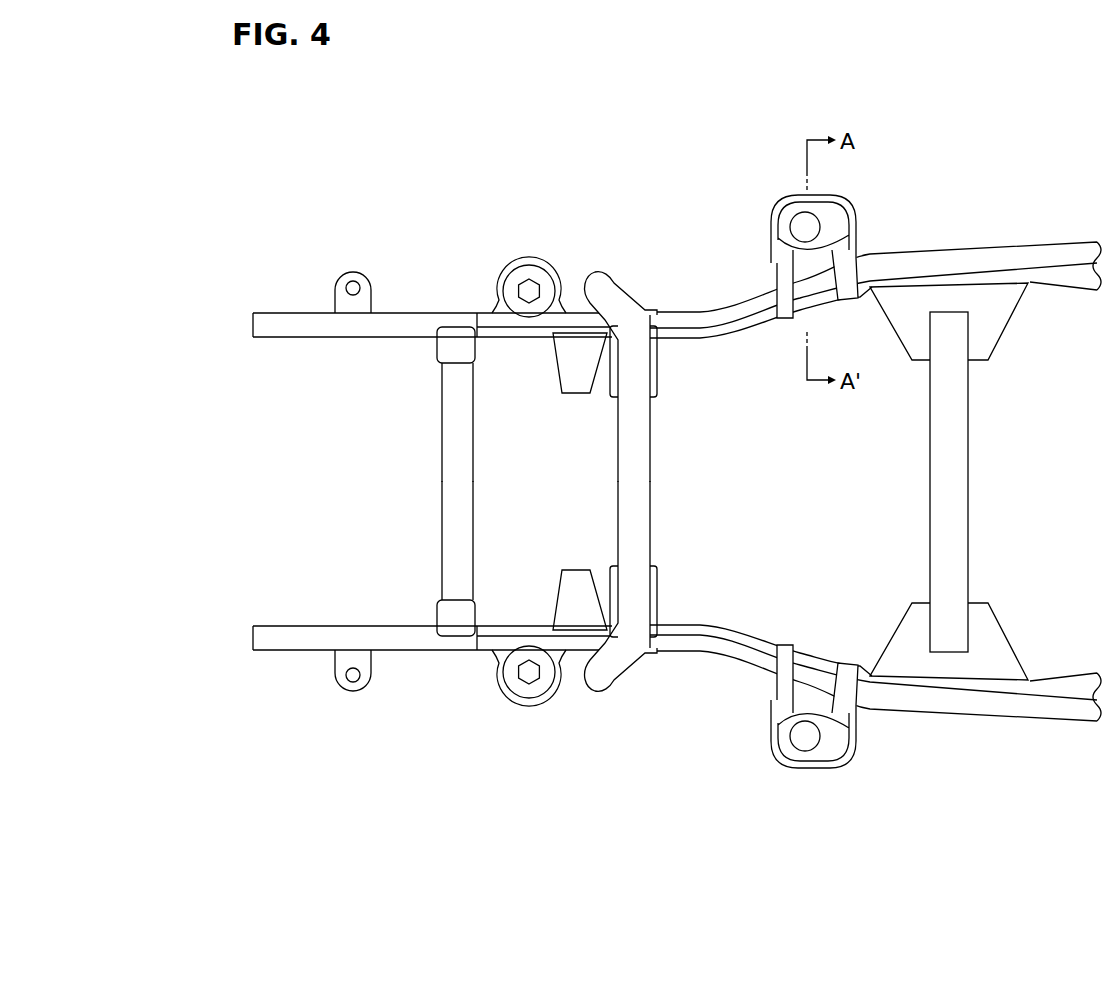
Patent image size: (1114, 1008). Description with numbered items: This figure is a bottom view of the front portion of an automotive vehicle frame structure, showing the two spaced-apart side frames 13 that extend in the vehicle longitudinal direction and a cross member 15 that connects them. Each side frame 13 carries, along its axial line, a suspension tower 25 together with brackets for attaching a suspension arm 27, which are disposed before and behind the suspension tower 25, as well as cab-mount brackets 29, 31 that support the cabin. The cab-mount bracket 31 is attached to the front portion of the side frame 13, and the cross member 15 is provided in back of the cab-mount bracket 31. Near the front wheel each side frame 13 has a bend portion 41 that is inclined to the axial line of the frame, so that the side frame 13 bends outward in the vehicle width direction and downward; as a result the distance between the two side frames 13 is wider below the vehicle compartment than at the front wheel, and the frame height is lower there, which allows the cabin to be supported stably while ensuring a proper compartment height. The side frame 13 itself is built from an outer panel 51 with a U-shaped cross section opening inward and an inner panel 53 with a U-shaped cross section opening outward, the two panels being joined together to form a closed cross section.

The side frame 13 is at (260, 308).
The cross member 15 is at (970, 480).
The suspension tower 25 is at (518, 262).
The bracket for attaching a suspension arm 27 is at (528, 708).
The cab-mount bracket 29 is at (353, 268).
The cab-mount bracket 31 is at (858, 257).
The bend portion 41 is at (918, 103).
The outer panel 51 is at (707, 313).
The inner panel 53 is at (723, 338).